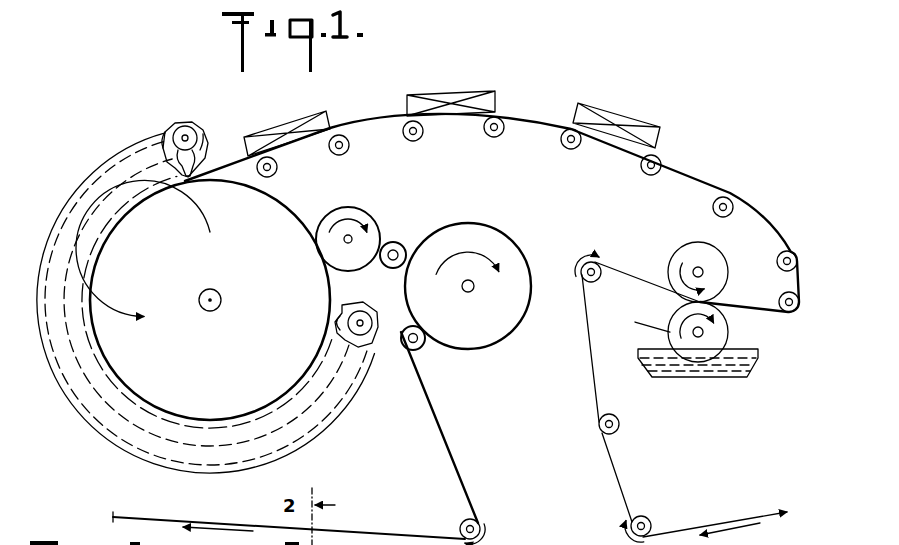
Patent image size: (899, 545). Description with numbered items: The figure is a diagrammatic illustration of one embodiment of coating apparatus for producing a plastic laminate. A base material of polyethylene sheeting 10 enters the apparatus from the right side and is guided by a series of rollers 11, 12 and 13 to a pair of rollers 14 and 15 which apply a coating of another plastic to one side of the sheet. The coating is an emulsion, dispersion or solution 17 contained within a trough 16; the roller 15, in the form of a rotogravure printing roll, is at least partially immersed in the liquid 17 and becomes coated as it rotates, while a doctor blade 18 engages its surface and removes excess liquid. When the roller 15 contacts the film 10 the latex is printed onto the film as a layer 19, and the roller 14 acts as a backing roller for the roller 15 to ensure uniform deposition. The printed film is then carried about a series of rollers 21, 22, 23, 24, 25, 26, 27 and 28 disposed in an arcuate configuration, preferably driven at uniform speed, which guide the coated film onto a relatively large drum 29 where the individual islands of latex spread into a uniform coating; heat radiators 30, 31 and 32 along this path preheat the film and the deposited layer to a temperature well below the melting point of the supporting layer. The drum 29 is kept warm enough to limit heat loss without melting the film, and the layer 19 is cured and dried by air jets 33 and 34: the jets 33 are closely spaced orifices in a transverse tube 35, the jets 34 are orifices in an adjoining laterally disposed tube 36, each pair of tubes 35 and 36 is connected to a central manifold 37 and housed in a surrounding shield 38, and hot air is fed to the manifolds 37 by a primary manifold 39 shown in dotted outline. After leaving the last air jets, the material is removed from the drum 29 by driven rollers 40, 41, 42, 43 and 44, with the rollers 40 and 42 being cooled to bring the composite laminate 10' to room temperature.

The polyethylene base material 10 is at (715, 513).
The composite film or laminate 10' is at (289, 515).
The roller 11 is at (649, 518).
The roller 12 is at (619, 424).
The roller 13 is at (595, 279).
The backing roller 14 is at (672, 258).
The rotogravure printing roll 15 is at (720, 336).
The trough 16 is at (758, 358).
The emulsion, dispersion or solution 17 is at (740, 353).
The doctor blade 18 is at (652, 326).
The printed layer 19 is at (752, 216).
The roller 21 is at (777, 258).
The roller 22 is at (713, 208).
The roller 23 is at (645, 175).
The roller 24 is at (568, 149).
The roller 25 is at (490, 137).
The roller 26 is at (410, 141).
The roller 27 is at (339, 155).
The roller 28 is at (269, 177).
The drum 29 is at (216, 342).
The heat radiator 30 is at (617, 119).
The heat radiator 31 is at (450, 92).
The heat radiator 32 is at (277, 122).
The air jets 33 is at (193, 182).
The air jets 34 is at (186, 181).
The transverse tube 35 is at (203, 150).
The laterally disposed tube 36 is at (163, 160).
The central manifold 37 is at (187, 130).
The shield 38 is at (175, 128).
The primary manifold 39 is at (96, 430).
The driven roller 40 is at (353, 208).
The driven roller 41 is at (394, 242).
The driven roller 42 is at (470, 223).
The driven roller 43 is at (421, 349).
The driven roller 44 is at (461, 522).